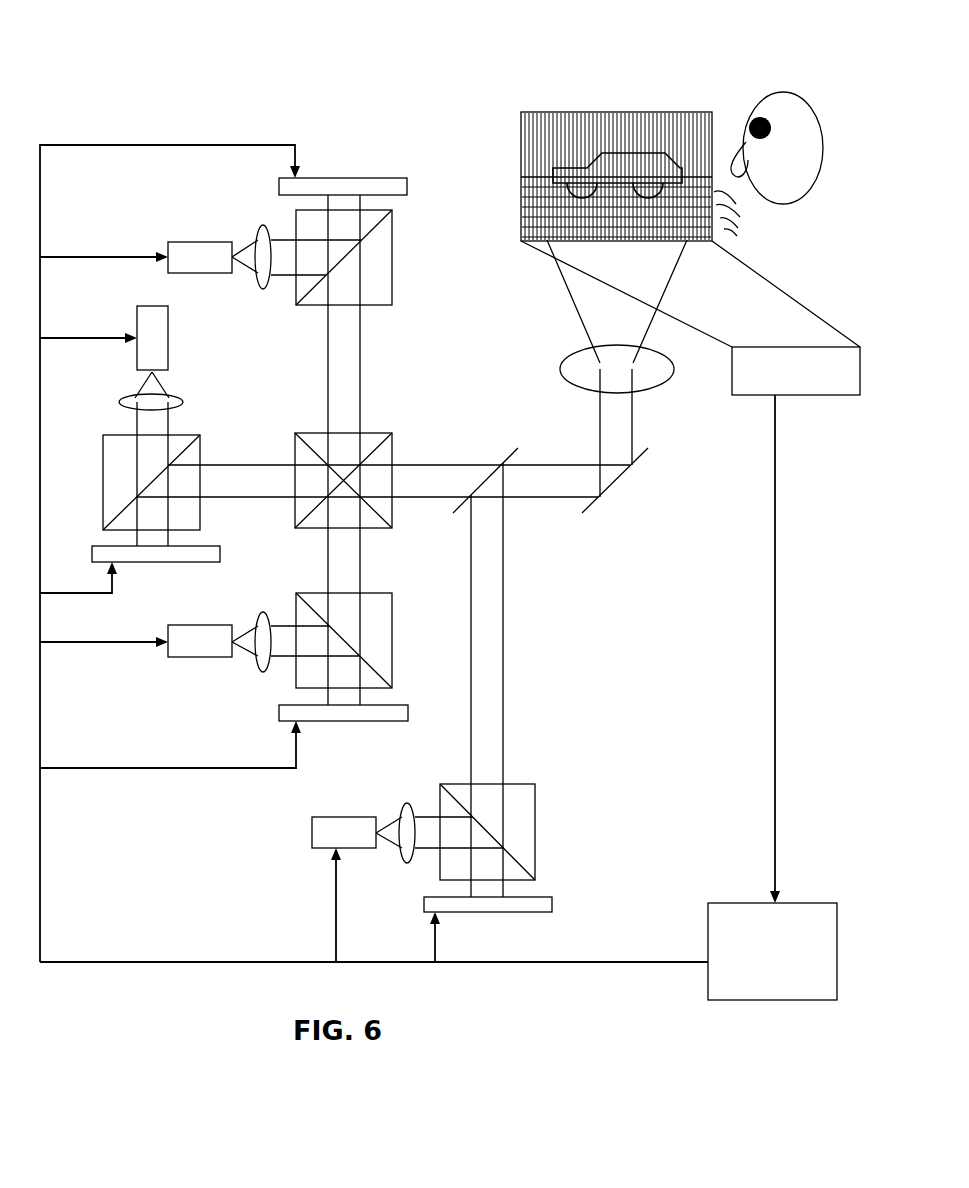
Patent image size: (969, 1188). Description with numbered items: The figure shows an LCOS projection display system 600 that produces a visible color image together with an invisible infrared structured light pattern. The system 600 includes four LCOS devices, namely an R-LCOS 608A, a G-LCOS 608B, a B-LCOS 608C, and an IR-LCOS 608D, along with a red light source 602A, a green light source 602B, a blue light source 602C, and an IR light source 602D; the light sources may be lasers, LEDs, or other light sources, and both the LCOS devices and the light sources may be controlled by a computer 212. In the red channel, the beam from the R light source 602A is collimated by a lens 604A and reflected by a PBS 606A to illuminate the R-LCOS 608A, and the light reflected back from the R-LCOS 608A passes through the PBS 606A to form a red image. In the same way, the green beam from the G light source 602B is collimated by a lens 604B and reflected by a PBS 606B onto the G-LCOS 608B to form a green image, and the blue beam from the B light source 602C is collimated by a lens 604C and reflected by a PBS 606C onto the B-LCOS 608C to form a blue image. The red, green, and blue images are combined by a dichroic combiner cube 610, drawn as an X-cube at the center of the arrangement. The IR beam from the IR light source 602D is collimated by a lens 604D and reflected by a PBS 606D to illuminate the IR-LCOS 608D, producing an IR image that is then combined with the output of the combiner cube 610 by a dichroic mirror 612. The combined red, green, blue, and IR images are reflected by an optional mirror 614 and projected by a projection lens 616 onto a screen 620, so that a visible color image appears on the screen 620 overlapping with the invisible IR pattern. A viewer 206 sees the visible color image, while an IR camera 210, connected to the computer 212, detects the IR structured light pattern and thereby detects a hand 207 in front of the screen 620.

The LCOS projection display system 600 is at (181, 72).
The R light source 602A is at (180, 242).
The lens 604A is at (258, 232).
The PBS 606A is at (393, 290).
The R-LCOS 608A is at (395, 178).
The G light source 602B is at (170, 353).
The lens 604B is at (182, 400).
The PBS 606B is at (185, 435).
The G-LCOS 608B is at (210, 546).
The B light source 602C is at (182, 658).
The lens 604C is at (260, 668).
The PBS 606C is at (377, 593).
The B-LCOS 608C is at (398, 703).
The IR light source 602D is at (352, 815).
The lens 604D is at (400, 860).
The PBS 606D is at (537, 832).
The IR-LCOS 608D is at (540, 897).
The dichroic combiner cube 610 is at (378, 433).
The dichroic mirror 612 is at (510, 460).
The mirror 614 is at (612, 487).
The projection lens 616 is at (565, 362).
The screen 620 is at (562, 112).
The viewer 206 is at (808, 98).
The hand 207 is at (733, 212).
The IR camera 210 is at (808, 393).
The computer 212 is at (743, 903).